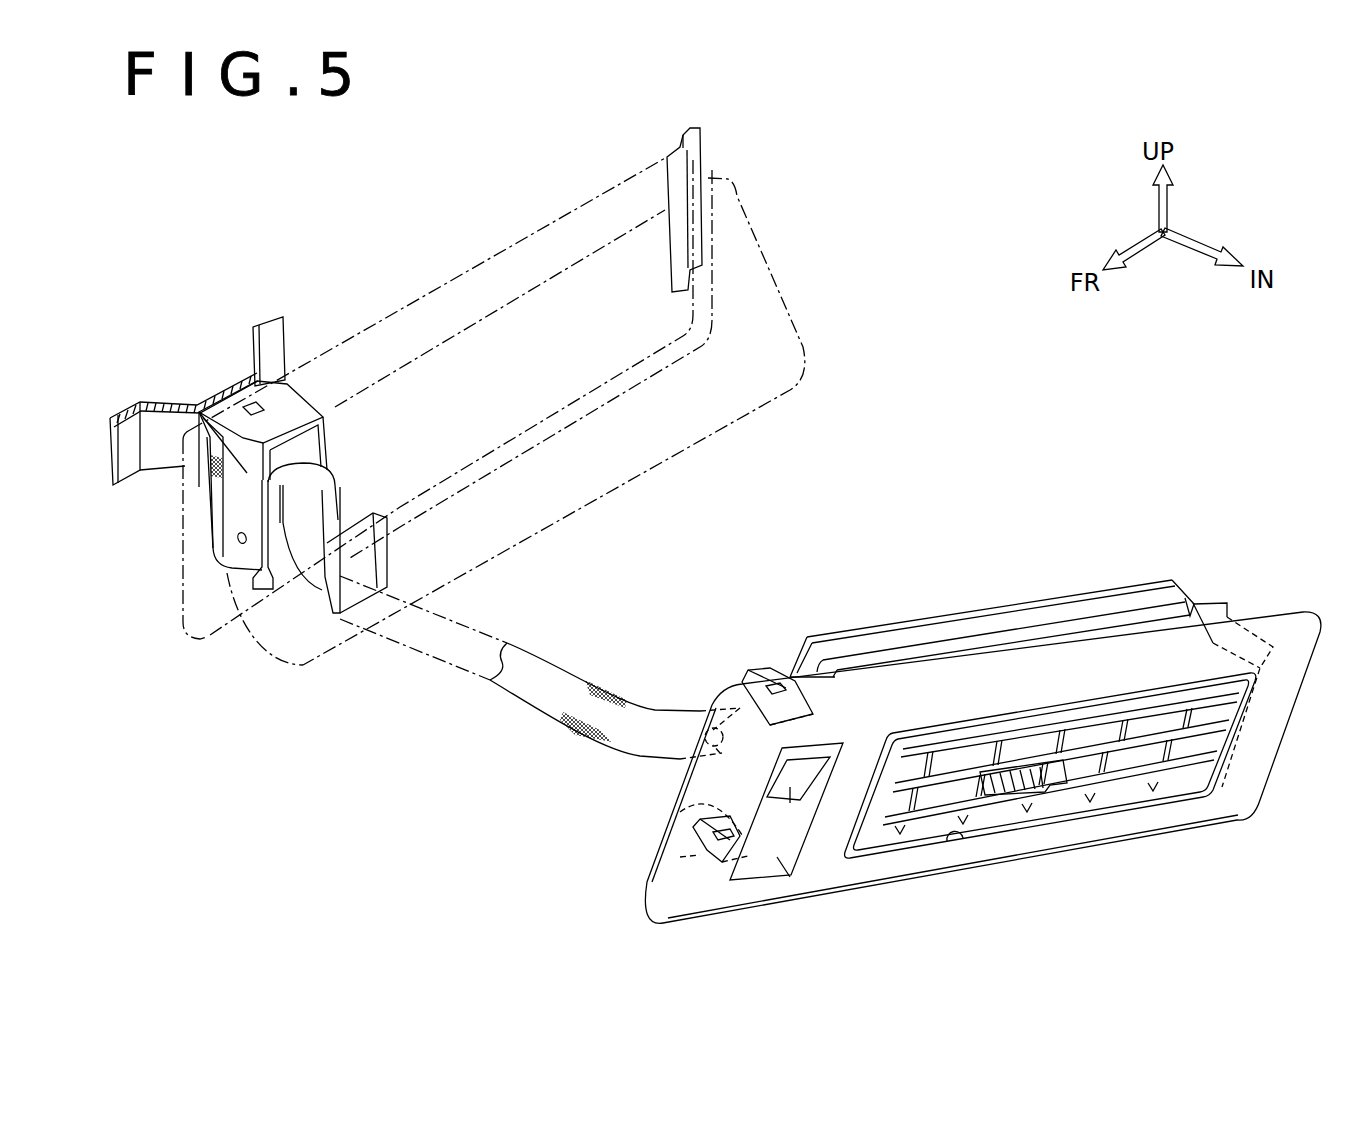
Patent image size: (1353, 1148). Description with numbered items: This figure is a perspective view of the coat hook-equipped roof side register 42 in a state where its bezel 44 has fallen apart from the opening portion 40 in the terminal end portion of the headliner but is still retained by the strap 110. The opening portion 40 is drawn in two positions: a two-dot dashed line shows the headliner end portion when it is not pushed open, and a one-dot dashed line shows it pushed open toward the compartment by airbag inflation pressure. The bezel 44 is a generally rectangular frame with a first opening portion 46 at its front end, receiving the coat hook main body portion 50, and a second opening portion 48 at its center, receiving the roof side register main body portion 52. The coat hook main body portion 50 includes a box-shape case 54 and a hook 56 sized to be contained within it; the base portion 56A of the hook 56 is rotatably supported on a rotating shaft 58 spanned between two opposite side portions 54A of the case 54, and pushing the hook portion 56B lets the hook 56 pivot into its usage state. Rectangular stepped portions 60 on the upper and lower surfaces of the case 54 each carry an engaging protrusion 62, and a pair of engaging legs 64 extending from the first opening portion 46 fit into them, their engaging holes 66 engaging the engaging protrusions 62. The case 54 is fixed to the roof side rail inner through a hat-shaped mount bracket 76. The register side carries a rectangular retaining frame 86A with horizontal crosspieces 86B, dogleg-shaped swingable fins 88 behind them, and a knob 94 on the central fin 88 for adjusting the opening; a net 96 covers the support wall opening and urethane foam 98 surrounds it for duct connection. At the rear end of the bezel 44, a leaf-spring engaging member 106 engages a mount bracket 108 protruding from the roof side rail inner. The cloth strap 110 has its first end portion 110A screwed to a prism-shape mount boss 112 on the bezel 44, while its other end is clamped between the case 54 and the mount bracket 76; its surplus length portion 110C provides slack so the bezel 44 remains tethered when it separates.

The opening portion 40 is at (505, 320).
The coat hook-equipped roof side register 42 is at (947, 674).
The bezel 44 is at (902, 893).
The first opening portion 46 is at (757, 878).
The second opening portion 48 is at (955, 843).
The coat hook main body portion 50 is at (240, 503).
The roof side register main body portion 52 is at (1031, 726).
The case 54 is at (207, 537).
The side portions 54A is at (315, 429).
The hook 56 is at (297, 600).
The base portion 56A is at (308, 488).
The hook portion 56B is at (368, 567).
The rotating shaft 58 is at (240, 548).
The stepped portions 60 is at (287, 387).
The engaging protrusion 62 is at (250, 403).
The engaging leg 64 is at (757, 670).
The engaging hole 66 is at (780, 684).
The mount bracket 76 is at (108, 452).
The retaining frame 86A is at (1100, 787).
The horizontal crosspieces 86B is at (1173, 720).
The fins 88 is at (1083, 727).
The knob 94 is at (1043, 797).
The net 96 is at (995, 608).
The urethane foam 98 is at (1063, 620).
The engaging member 106 is at (1215, 617).
The mount bracket 108 is at (668, 278).
The strap 110 is at (540, 693).
The first end portion 110A is at (703, 718).
The surplus length portion 110C is at (523, 688).
The mount boss 112 is at (688, 760).